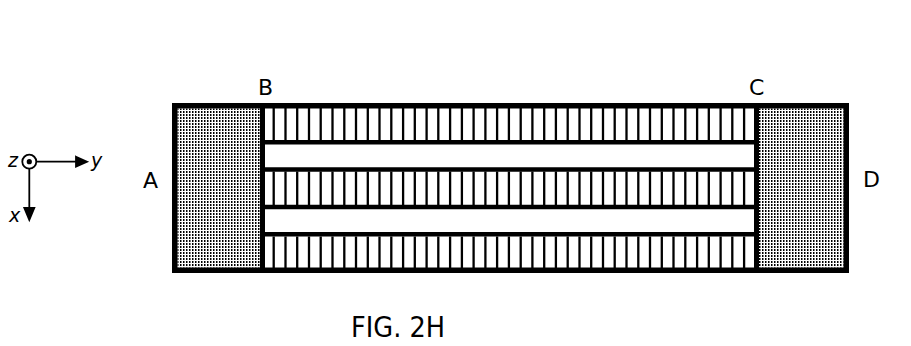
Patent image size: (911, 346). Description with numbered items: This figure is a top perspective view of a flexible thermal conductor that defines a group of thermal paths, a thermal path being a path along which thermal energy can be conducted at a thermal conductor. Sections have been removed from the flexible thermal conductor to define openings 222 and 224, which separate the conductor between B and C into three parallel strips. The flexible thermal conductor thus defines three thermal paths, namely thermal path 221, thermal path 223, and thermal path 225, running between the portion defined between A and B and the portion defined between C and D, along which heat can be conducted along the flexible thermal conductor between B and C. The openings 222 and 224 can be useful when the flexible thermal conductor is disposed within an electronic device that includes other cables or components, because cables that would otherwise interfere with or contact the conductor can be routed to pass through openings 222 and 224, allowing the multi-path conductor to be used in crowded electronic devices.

The thermal path 221 is at (440, 115).
The opening 222 is at (537, 153).
The thermal path 223 is at (650, 180).
The opening 224 is at (650, 227).
The thermal path 225 is at (533, 262).